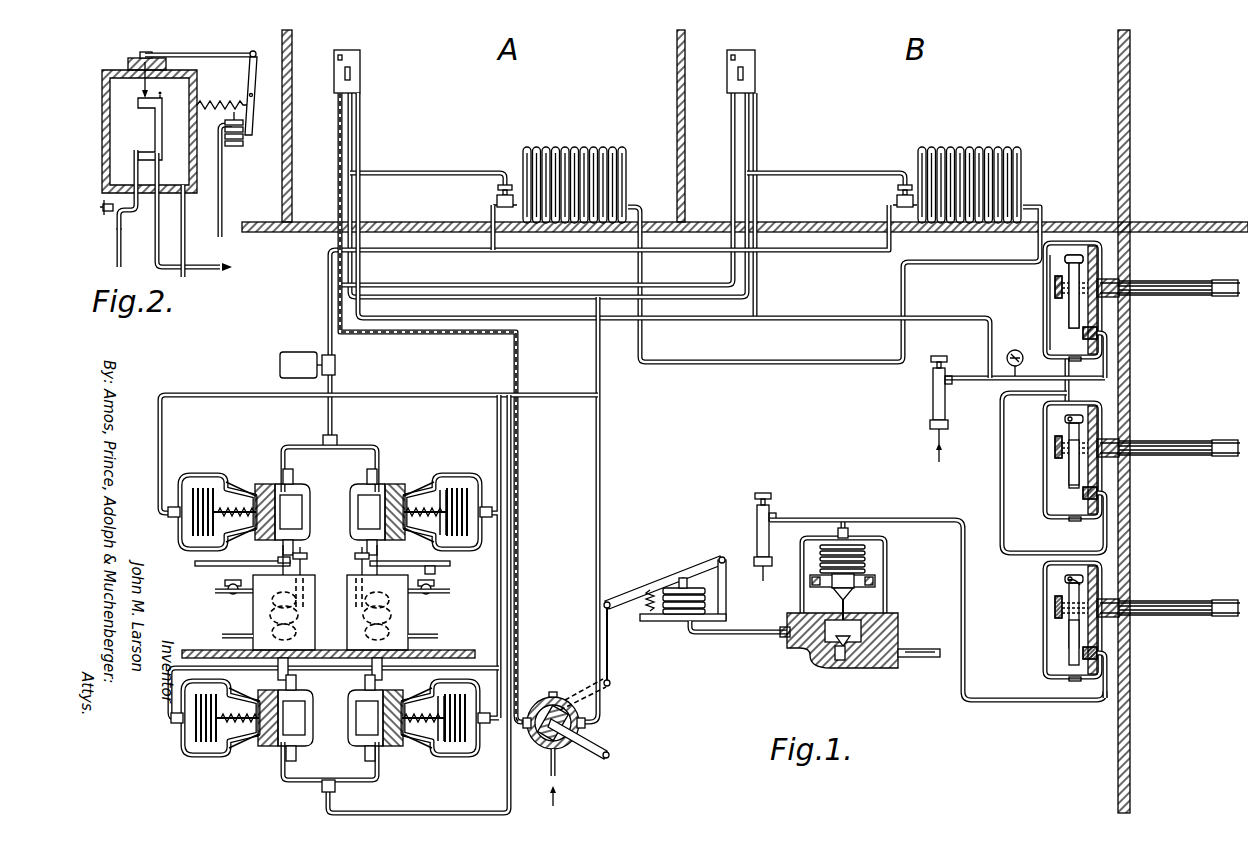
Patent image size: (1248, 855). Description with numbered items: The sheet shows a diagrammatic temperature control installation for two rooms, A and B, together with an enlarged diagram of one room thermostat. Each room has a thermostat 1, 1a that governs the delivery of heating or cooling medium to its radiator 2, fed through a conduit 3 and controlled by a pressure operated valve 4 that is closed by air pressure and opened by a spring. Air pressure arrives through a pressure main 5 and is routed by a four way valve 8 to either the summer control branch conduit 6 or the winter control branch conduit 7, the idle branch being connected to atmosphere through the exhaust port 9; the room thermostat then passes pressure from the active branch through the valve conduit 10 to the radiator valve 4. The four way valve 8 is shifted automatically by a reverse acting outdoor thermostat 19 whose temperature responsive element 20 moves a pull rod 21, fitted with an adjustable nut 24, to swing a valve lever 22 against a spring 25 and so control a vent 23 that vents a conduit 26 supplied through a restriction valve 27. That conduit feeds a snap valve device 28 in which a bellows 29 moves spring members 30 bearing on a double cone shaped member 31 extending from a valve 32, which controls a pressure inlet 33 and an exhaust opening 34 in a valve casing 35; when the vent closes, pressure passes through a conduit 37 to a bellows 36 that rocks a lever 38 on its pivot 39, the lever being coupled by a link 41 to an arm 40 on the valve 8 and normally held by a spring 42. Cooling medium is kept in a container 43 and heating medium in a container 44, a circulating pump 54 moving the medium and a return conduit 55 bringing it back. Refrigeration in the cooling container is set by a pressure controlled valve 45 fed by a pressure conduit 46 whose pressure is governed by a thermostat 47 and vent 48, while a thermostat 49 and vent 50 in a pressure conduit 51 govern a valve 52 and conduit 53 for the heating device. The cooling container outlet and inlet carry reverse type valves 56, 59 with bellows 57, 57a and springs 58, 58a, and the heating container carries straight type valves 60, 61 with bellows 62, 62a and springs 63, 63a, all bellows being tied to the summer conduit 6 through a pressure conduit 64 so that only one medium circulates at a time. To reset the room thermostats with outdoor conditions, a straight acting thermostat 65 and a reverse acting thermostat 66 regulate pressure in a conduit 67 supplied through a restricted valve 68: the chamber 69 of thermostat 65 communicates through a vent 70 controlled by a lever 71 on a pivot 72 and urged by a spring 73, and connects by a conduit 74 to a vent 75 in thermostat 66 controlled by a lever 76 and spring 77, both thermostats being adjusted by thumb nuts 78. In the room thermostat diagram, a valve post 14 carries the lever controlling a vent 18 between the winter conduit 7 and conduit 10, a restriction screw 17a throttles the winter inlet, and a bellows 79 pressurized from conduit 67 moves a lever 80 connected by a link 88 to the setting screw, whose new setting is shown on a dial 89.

In FIG. 1, the room thermostat 1 is at (362, 69).
In FIG. 1, the room thermostat 1a is at (758, 67).
In FIG. 1, the radiator 2 is at (572, 147).
In FIG. 1, the valve conduit 10 is at (452, 172).
In FIG. 2, the valve conduit 10 is at (215, 262).
In FIG. 1, the pressure operated valve 4 is at (495, 194).
In FIG. 1, the conduit 3 is at (470, 253).
In FIG. 1, the conduit 67 is at (938, 318).
In FIG. 2, the conduit 67 is at (222, 202).
In FIG. 1, the outdoor thermostat 65 is at (1108, 258).
In FIG. 1, the pivot 72 is at (1063, 266).
In FIG. 1, the thumb nut 78 is at (1054, 289).
In FIG. 1, the air tight chamber 69 is at (1049, 309).
In FIG. 1, the lever 71 is at (1066, 318).
In FIG. 1, the spring 73 is at (1110, 275).
In FIG. 1, the vent 70 is at (1108, 330).
In FIG. 1, the restricted valve 68 is at (932, 394).
In FIG. 1, the outdoor thermostat 66 is at (1108, 417).
In FIG. 1, the spring 77 is at (1108, 434).
In FIG. 1, the conduit 74 is at (1002, 456).
In FIG. 1, the lever 76 is at (1068, 480).
In FIG. 1, the vent 75 is at (1108, 480).
In FIG. 1, the reverse acting outdoor thermostat 19 is at (1108, 572).
In FIG. 1, the spring 25 is at (1067, 584).
In FIG. 1, the adjustable nut 24 is at (1054, 600).
In FIG. 1, the valve lever 22 is at (1067, 638).
In FIG. 1, the pull rod 21 is at (1160, 602).
In FIG. 1, the temperature responsive element 20 is at (1200, 602).
In FIG. 1, the vent 23 is at (1087, 662).
In FIG. 1, the conduit 26 is at (918, 518).
In FIG. 1, the restriction valve 27 is at (757, 527).
In FIG. 1, the bellows 29 is at (866, 556).
In FIG. 1, the spring members 30 is at (875, 578).
In FIG. 1, the snap valve device 28 is at (889, 592).
In FIG. 1, the double cone shaped member 31 is at (853, 594).
In FIG. 1, the exhaust opening 34 is at (846, 626).
In FIG. 1, the valve 32 is at (899, 626).
In FIG. 1, the pressure inlet 33 is at (866, 664).
In FIG. 1, the valve casing 35 is at (832, 656).
In FIG. 1, the bellows 36 is at (682, 612).
In FIG. 1, the conduit 37 is at (742, 636).
In FIG. 1, the lever 38 is at (638, 585).
In FIG. 1, the pivot 39 is at (719, 560).
In FIG. 1, the spring 42 is at (648, 598).
In FIG. 1, the link 41 is at (612, 690).
In FIG. 1, the arm 40 is at (611, 753).
In FIG. 1, the exhaust port 9 is at (553, 698).
In FIG. 1, the pressure main 5 is at (558, 775).
In FIG. 1, the four way valve 8 is at (572, 748).
In FIG. 1, the summer control branch conduit 6 is at (595, 582).
In FIG. 2, the summer control branch conduit 6 is at (187, 277).
In FIG. 1, the winter control branch conduit 7 is at (518, 590).
In FIG. 2, the winter control branch conduit 7 is at (115, 260).
In FIG. 1, the pressure conduit 64 is at (538, 400).
In FIG. 1, the circulating pump 54 is at (295, 351).
In FIG. 1, the valve 60 is at (207, 473).
In FIG. 1, the bellows 62 is at (212, 494).
In FIG. 1, the spring 63 is at (240, 505).
In FIG. 1, the pressure operated valve 56 is at (448, 473).
In FIG. 1, the bellows 57 is at (455, 498).
In FIG. 1, the spring 58 is at (425, 494).
In FIG. 1, the pressure conduit 51 is at (235, 562).
In FIG. 1, the vent 50 is at (275, 568).
In FIG. 1, the thermostat 49 is at (303, 565).
In FIG. 1, the thermostat 47 is at (355, 564).
In FIG. 1, the vent 48 is at (378, 566).
In FIG. 1, the pressure conduit 46 is at (434, 568).
In FIG. 1, the valve 52 is at (225, 583).
In FIG. 1, the conduit 53 is at (222, 591).
In FIG. 1, the container 44 is at (253, 605).
In FIG. 1, the container 43 is at (408, 605).
In FIG. 1, the pressure controlled valve 45 is at (445, 587).
In FIG. 1, the valve 61 is at (208, 747).
In FIG. 1, the bellows 62a is at (225, 735).
In FIG. 1, the spring 63a is at (248, 735).
In FIG. 1, the spring 58a is at (415, 735).
In FIG. 1, the valve 59 is at (432, 747).
In FIG. 1, the bellows 57a is at (456, 754).
In FIG. 1, the return conduit 55 is at (455, 813).
In FIG. 2, the dial 89 is at (126, 60).
In FIG. 2, the link 88 is at (218, 51).
In FIG. 2, the lever 80 is at (253, 88).
In FIG. 2, the valve post 14 is at (152, 127).
In FIG. 2, the vent 18 is at (130, 146).
In FIG. 2, the bellows 79 is at (240, 144).
In FIG. 2, the restriction valve screw 17a is at (104, 212).